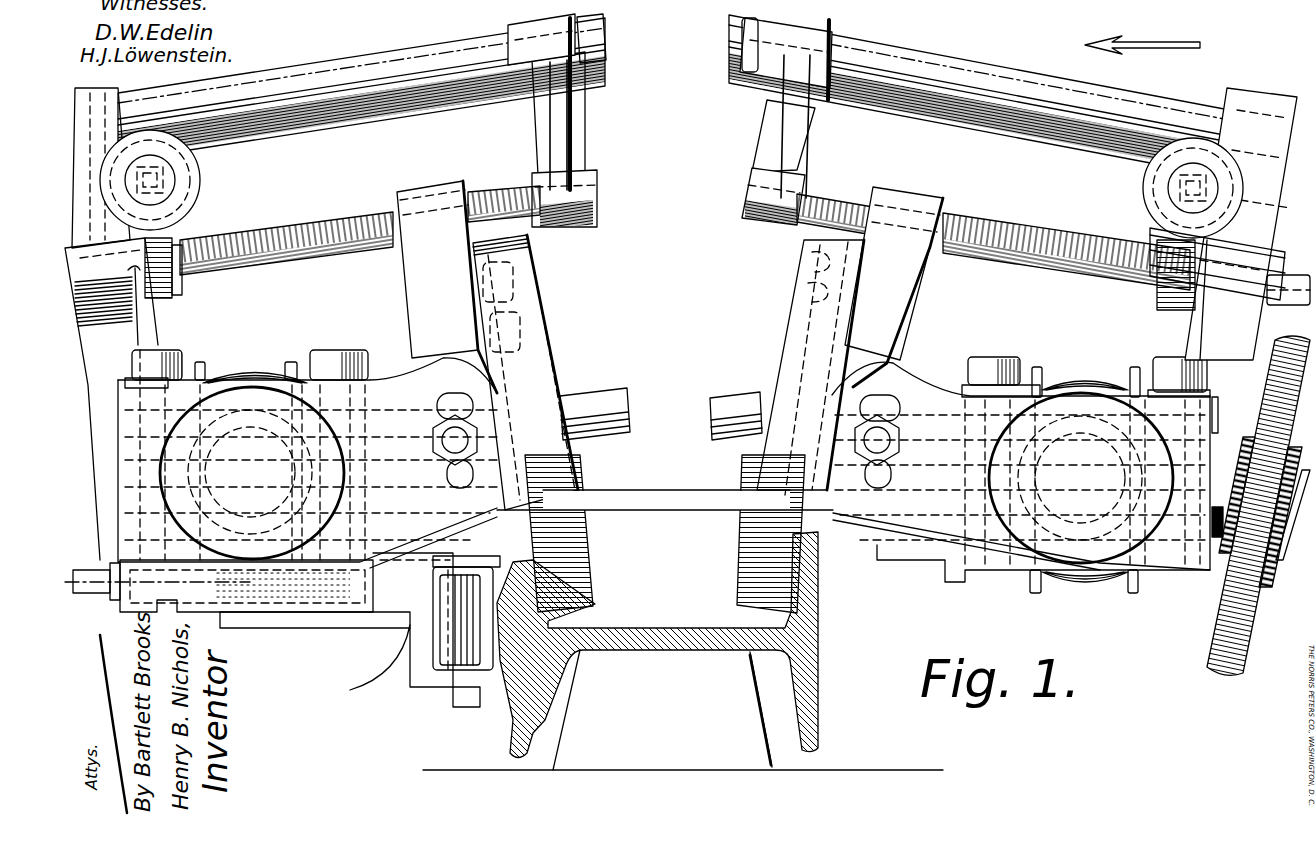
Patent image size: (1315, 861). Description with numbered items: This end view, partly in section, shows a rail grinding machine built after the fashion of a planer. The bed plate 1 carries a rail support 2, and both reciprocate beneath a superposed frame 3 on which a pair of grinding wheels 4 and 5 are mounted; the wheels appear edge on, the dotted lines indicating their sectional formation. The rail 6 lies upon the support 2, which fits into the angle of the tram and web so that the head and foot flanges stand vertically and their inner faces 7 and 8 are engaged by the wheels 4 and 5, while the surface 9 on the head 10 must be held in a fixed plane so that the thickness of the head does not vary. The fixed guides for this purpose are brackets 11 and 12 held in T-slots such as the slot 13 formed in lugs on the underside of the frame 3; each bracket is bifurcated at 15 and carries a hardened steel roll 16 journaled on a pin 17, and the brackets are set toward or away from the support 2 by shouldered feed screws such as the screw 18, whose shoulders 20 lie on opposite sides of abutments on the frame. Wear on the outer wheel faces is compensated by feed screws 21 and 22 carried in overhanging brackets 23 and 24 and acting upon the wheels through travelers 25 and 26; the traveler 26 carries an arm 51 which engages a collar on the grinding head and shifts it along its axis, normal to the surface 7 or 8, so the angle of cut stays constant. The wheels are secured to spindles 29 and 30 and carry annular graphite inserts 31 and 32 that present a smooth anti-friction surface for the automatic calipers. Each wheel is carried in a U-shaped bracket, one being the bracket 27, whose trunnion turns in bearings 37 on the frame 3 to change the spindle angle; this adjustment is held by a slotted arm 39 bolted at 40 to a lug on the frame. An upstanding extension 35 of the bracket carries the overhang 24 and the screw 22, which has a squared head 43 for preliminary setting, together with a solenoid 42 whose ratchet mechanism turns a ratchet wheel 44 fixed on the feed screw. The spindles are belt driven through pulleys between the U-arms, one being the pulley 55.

The bed plate 1 is at (843, 770).
The rail support 2 is at (662, 710).
The superposed frame 3 is at (645, 512).
The grinding wheel 4 is at (536, 276).
The grinding wheel 5 is at (792, 318).
The rail 6 is at (645, 628).
The inner face of head flange 7 is at (590, 599).
The inner face of foot flange 8 is at (820, 582).
The surface on the head 9 is at (465, 611).
The head 10 is at (516, 657).
The bracket 11 is at (300, 613).
The bracket 12 is at (243, 621).
The T-slot 13 is at (388, 641).
The bifurcation 15 is at (440, 646).
The hardened steel roll 16 is at (470, 652).
The pin 17 is at (468, 697).
The shouldered feed screw 18 is at (120, 578).
The shoulders 20 is at (112, 568).
The feed screw 21 is at (320, 222).
The feed screw 22 is at (1013, 226).
The overhanging bracket 23 is at (364, 56).
The overhanging bracket 24 is at (974, 58).
The traveler 25 is at (445, 186).
The traveler 26 is at (922, 196).
The bracket 27 is at (116, 324).
The spindle 29 is at (594, 396).
The spindle 30 is at (740, 396).
The annular insert 31 is at (808, 292).
The annular insert 32 is at (812, 262).
The upstanding extension 35 is at (1241, 225).
The bearings 37 is at (1175, 566).
The slotted arm 39 is at (955, 377).
The bolt 40 is at (881, 438).
The solenoid 42 is at (1225, 162).
The squared head 43 is at (1283, 286).
The ratchet wheel 44 is at (1165, 258).
The arm 51 is at (905, 290).
The pulley 55 is at (1072, 384).